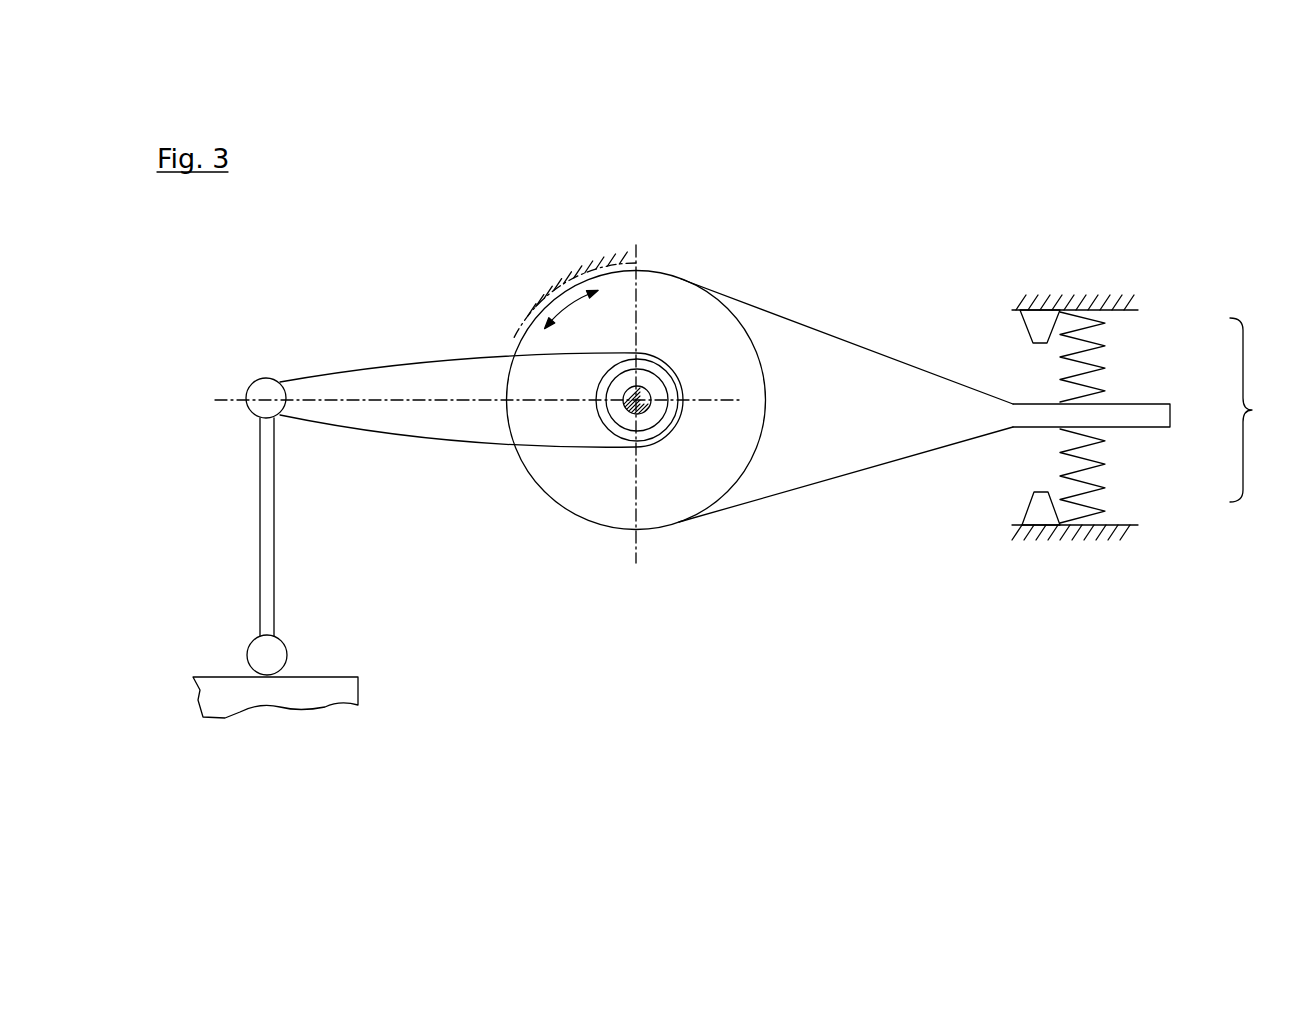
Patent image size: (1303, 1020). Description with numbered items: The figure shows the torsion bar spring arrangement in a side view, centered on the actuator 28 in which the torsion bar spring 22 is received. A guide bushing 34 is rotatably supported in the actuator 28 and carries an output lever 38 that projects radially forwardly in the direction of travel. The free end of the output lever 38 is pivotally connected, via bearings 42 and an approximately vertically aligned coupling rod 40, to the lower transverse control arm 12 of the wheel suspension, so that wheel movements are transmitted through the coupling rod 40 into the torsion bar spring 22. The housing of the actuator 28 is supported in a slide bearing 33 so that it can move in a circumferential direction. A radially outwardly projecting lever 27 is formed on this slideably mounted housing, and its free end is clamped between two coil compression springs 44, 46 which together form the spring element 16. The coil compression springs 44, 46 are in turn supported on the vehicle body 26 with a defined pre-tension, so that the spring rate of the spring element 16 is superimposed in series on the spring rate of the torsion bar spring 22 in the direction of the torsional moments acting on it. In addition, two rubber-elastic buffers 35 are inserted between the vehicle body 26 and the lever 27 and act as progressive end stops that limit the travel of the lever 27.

The lower transverse control arm 12 is at (293, 712).
The spring element 16 is at (1151, 410).
The torsion bar spring 22 is at (652, 388).
The vehicle body 26 is at (1117, 297).
The lever 27 is at (855, 345).
The actuator 28 is at (686, 530).
The slide bearing 33 is at (585, 262).
The guide bushing 34 is at (613, 428).
The rubber-elastic buffers 35 is at (1037, 323).
The output lever 38 is at (356, 356).
The coupling rod 40 is at (260, 523).
The bearings 42 is at (249, 378).
The coil compression spring 44 is at (1101, 343).
The coil compression spring 46 is at (1101, 465).